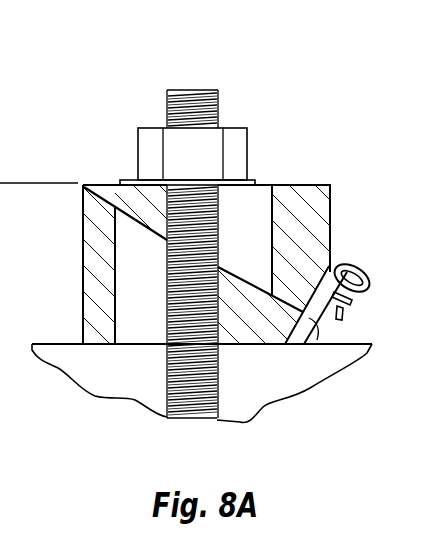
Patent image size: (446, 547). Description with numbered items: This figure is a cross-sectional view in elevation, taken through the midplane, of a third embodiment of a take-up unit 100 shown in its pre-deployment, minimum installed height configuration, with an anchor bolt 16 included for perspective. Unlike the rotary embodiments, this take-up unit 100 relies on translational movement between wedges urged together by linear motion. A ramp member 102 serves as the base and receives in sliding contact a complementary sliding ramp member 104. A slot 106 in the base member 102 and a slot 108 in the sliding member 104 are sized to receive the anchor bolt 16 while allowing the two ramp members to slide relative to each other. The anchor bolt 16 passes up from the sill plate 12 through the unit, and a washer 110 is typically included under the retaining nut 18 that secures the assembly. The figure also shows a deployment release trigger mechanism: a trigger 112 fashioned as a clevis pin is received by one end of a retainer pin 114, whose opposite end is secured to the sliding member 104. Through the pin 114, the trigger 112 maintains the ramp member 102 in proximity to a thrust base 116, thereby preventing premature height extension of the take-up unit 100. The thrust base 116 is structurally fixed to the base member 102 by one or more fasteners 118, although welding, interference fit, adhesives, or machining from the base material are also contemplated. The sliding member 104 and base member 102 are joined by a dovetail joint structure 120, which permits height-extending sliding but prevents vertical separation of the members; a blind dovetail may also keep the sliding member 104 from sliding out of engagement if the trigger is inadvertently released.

The sill plate 12 is at (259, 402).
The anchor bolt 16 is at (210, 90).
The retaining nut 18 is at (237, 137).
The take-up unit 100 is at (354, 146).
The ramp member 102 is at (95, 268).
The sliding ramp member 104 is at (327, 198).
The slot 106 is at (138, 318).
The slot 108 is at (250, 213).
The washer 110 is at (132, 182).
The trigger 112 is at (364, 268).
The retainer pin 114 is at (357, 301).
The thrust base 116 is at (338, 270).
The fastener 118 is at (333, 350).
The dovetail joint structure 120 is at (105, 195).